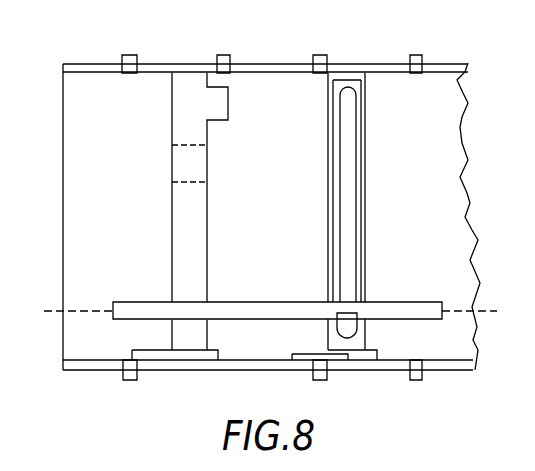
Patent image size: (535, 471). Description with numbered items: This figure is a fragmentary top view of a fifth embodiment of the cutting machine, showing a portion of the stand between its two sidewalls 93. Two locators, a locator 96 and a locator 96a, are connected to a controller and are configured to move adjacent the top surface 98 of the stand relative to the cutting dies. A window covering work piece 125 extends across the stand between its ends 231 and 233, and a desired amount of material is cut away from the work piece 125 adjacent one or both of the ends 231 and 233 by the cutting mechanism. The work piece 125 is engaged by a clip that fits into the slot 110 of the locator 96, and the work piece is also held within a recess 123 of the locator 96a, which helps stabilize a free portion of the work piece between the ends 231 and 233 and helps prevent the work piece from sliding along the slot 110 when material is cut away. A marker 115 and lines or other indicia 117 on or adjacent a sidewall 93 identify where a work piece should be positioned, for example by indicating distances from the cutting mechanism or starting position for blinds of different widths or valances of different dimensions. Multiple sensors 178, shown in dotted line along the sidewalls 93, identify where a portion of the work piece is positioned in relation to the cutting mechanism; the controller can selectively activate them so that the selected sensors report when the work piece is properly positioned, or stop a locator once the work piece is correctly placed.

The sidewall 93 is at (88, 63).
The sensors 178 is at (220, 56).
The top surface 98 is at (277, 105).
The locator 96a is at (147, 196).
The locator 96 is at (388, 160).
The recess 123 is at (195, 163).
The window covering work piece 125 is at (263, 308).
The end of work piece 231 is at (62, 317).
The end of work piece 233 is at (485, 314).
The slot 110 is at (348, 216).
The marker 115 is at (328, 353).
The indicia 117 is at (381, 362).